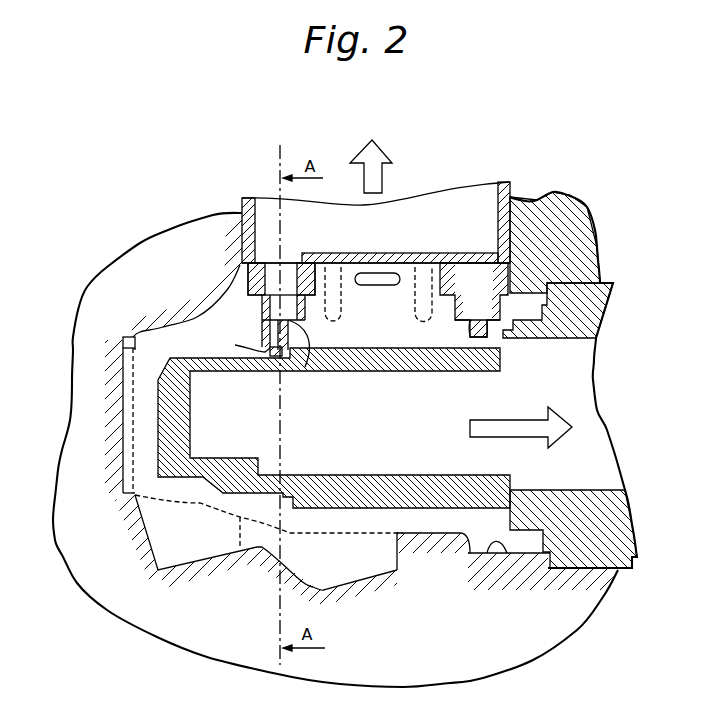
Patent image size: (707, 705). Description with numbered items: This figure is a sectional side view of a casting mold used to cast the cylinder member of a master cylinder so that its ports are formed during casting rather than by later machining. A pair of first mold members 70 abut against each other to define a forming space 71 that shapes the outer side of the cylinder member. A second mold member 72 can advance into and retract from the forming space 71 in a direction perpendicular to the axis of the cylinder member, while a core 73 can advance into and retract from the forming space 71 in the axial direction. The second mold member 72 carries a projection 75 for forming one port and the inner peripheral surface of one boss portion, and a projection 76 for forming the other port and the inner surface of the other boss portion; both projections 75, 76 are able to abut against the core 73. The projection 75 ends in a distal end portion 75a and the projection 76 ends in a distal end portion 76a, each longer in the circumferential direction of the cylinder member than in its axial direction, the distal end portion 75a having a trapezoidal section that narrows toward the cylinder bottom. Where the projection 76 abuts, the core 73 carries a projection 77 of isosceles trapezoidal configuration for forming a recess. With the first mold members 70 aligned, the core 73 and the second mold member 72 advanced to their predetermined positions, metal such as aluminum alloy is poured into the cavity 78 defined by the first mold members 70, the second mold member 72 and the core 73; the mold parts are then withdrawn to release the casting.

The first mold members 70 is at (216, 613).
The forming space 71 is at (503, 553).
The second mold member 72 is at (464, 188).
The core 73 is at (583, 385).
The projection 75 is at (303, 325).
The distal end portion 75a is at (268, 343).
The projection 76 is at (457, 310).
The distal end portion 76a is at (500, 330).
The projection 77 is at (477, 335).
The cavity 78 is at (130, 382).